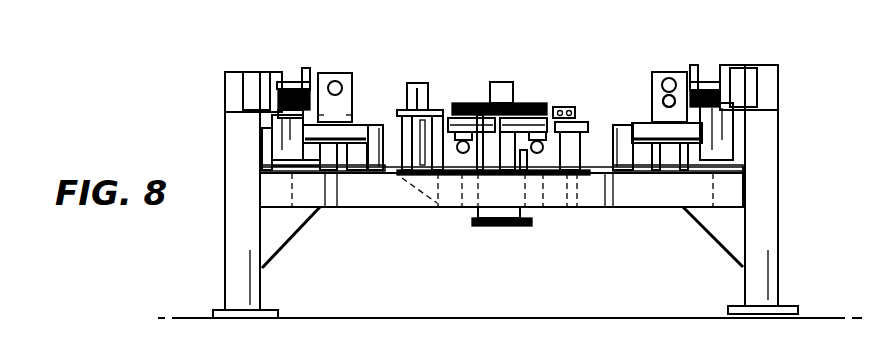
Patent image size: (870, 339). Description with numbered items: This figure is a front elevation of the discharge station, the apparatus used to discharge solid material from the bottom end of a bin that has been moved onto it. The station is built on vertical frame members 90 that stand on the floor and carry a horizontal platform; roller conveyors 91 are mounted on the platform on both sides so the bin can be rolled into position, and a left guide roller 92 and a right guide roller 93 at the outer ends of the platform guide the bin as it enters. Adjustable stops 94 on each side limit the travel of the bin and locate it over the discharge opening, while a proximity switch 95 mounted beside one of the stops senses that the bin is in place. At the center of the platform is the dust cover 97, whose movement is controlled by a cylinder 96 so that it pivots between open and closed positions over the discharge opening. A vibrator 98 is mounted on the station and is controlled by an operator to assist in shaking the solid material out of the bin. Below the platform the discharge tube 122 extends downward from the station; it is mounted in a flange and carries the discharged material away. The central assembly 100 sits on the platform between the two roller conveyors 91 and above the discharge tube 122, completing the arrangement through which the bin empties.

The vertical frame members 90 is at (778, 153).
The roller conveyors 91 is at (357, 125).
The left guide roller 92 is at (293, 82).
The right guide roller 93 is at (708, 75).
The adjustable stops 94 is at (335, 80).
The proximity switch 95 is at (659, 103).
The cylinder 96 is at (557, 107).
The dust cover 97 is at (438, 110).
The vibrator 98 is at (417, 83).
The platen assembly 100 is at (500, 82).
The discharge tube 122 is at (520, 226).